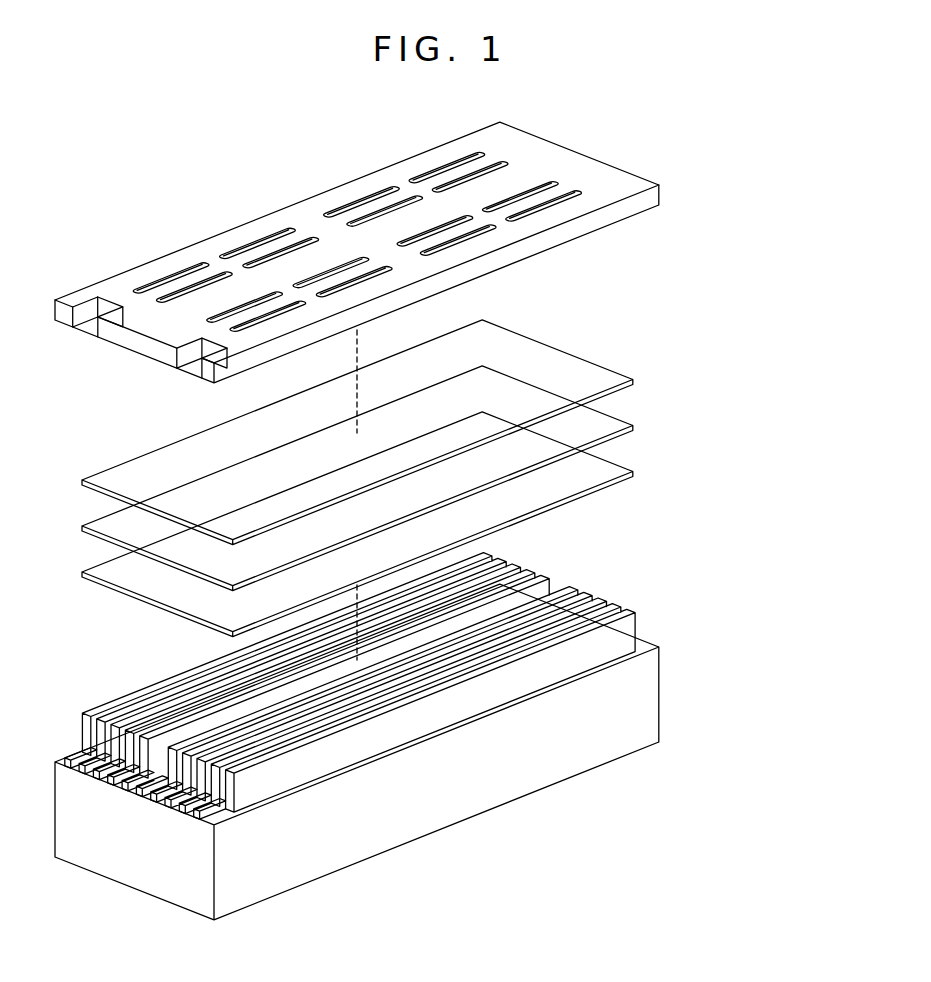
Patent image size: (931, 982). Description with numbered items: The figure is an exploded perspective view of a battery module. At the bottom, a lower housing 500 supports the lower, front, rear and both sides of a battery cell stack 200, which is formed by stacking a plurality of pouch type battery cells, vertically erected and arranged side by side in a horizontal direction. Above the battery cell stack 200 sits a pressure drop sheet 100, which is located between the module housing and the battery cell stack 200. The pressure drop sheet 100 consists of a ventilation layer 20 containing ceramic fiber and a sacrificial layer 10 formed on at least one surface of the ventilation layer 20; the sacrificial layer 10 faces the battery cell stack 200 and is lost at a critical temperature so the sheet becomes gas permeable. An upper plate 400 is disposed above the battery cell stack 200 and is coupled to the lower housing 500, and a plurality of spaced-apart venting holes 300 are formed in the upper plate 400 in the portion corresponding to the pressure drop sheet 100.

The sacrificial layer 10 is at (633, 380).
The ventilation layer 20 is at (633, 426).
The pressure drop sheet 100 is at (463, 478).
The battery cell stack 200 is at (635, 632).
The venting hole 300 is at (363, 203).
The upper plate 400 is at (437, 252).
The lower housing 500 is at (650, 703).